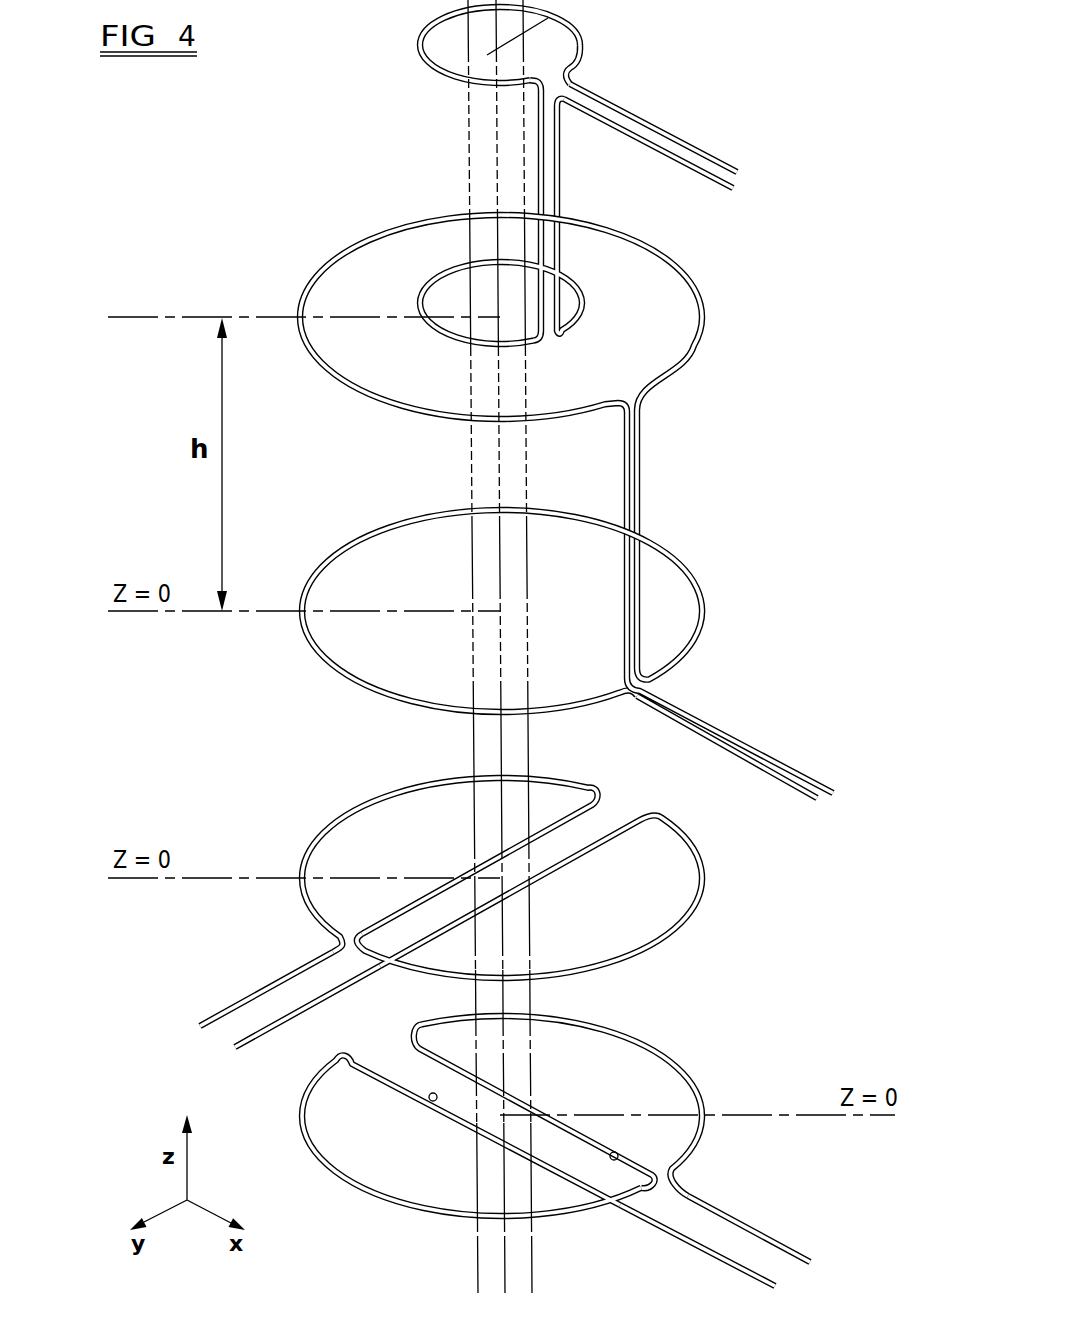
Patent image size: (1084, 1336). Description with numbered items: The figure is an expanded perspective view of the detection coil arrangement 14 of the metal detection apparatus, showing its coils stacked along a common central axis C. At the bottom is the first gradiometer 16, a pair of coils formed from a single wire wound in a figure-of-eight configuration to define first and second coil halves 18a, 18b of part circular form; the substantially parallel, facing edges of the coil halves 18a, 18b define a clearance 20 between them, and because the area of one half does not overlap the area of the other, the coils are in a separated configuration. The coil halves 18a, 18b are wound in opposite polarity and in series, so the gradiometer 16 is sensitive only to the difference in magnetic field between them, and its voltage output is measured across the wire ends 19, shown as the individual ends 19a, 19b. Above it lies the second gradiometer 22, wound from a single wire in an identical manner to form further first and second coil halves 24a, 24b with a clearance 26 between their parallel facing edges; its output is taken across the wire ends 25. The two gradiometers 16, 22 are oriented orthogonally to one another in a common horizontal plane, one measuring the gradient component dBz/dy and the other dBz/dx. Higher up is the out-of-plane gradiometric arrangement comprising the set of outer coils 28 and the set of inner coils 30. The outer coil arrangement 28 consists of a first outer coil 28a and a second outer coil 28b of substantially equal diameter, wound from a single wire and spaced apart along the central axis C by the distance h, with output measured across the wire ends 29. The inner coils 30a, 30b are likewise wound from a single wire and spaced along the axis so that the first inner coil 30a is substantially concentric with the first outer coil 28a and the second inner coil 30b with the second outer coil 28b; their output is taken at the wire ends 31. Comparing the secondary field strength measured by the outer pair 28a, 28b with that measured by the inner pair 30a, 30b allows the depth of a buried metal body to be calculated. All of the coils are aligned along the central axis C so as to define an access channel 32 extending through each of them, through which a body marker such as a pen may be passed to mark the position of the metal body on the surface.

The detection coil arrangement 14 is at (545, 172).
The inner coil arrangement 30 is at (387, 38).
The first inner coil 30a is at (583, 43).
The second inner coil 30b is at (433, 278).
The wire ends 31 is at (682, 158).
The access channel 32 is at (571, 13).
The outer coil arrangement 28 is at (598, 506).
The first outer coil 28a is at (699, 291).
The second outer coil 28b is at (697, 578).
The wire ends 29 is at (770, 755).
The second gradiometer 22 is at (486, 884).
The first coil half 24a is at (350, 815).
The second coil half 24b is at (704, 897).
The wire ends 25 is at (260, 1032).
The clearance 26 is at (641, 788).
The first gradiometer 16 is at (526, 1132).
The first coil half 18a is at (382, 1197).
The second coil half 18b is at (677, 1071).
The wire ends 19 is at (785, 1245).
The first connection point 19a is at (433, 1102).
The second connection point 19b is at (616, 1153).
The clearance 20 is at (378, 1049).
The central axis C is at (503, 1253).